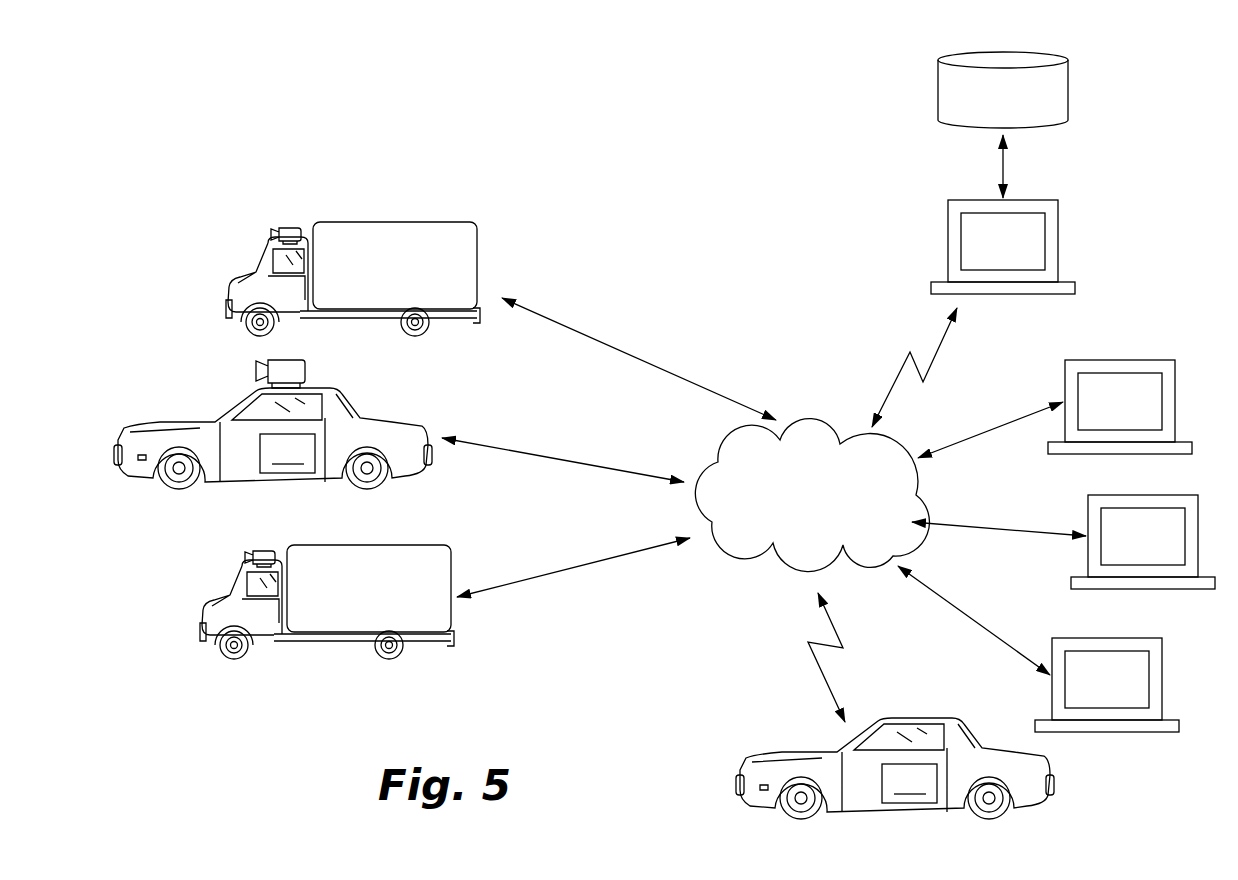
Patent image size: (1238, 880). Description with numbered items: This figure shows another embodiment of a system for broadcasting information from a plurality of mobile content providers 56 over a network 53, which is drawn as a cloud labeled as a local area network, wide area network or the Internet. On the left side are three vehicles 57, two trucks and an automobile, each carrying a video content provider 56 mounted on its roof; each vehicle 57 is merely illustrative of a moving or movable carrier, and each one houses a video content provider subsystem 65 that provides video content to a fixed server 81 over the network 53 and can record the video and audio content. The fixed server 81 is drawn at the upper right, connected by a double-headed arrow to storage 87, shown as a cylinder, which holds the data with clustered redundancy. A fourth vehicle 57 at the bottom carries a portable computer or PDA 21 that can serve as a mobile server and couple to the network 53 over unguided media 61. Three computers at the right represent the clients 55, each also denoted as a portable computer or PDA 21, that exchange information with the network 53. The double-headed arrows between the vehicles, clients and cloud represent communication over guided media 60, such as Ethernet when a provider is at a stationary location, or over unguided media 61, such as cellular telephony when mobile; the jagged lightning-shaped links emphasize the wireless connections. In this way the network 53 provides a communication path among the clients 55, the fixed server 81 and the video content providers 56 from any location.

The portable computer or PDA 21 is at (1075, 455).
The network 53 is at (810, 415).
The client 55 is at (932, 714).
The video content provider 56 is at (262, 262).
The vehicle 57 is at (390, 322).
The guided media 60 is at (764, 510).
The unguided media 61 is at (630, 354).
The video content provider subsystem 65 is at (281, 452).
The fixed server 81 is at (948, 228).
The storage 87 is at (938, 93).